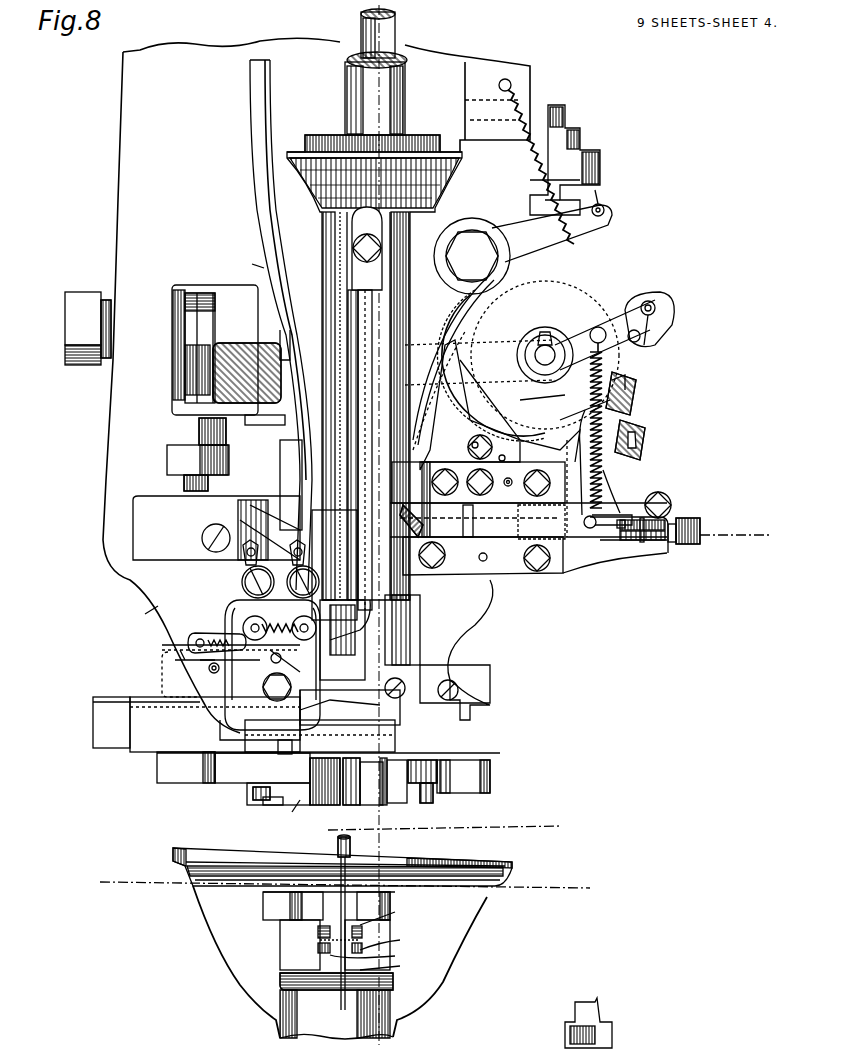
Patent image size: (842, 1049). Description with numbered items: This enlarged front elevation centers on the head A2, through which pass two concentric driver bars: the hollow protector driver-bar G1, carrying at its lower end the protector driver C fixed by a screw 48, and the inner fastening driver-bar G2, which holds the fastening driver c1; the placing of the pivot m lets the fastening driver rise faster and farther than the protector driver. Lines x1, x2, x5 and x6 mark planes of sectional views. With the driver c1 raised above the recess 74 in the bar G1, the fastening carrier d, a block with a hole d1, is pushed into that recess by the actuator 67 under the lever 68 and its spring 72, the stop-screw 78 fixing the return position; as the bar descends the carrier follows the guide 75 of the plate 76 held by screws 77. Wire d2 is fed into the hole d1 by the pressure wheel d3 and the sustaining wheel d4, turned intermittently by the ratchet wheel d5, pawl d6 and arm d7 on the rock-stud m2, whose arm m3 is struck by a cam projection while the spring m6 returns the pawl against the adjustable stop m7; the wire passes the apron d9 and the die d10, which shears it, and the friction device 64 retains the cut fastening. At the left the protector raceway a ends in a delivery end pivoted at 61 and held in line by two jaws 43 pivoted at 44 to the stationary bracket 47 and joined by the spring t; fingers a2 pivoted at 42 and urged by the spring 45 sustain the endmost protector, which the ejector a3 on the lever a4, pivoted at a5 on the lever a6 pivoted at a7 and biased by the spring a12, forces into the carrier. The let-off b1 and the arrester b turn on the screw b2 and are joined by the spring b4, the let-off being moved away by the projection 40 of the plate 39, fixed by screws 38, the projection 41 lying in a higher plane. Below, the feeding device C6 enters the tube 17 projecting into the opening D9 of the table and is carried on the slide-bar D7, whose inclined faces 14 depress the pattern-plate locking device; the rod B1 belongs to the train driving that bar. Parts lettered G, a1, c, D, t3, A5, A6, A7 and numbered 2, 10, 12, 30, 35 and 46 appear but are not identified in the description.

The head A2 is at (122, 175).
The fastening driver-bar G2 is at (396, 28).
The protector driver-bar G1 is at (348, 94).
The spindle housing column G is at (322, 215).
The protector driver C is at (380, 262).
The fastening driver c1 is at (382, 248).
The section line x2 is at (365, 9).
The curved lever a1 is at (254, 226).
The protector raceway a is at (256, 265).
The pivot a7 is at (75, 320).
The lever a6 is at (200, 340).
The pivot a5 is at (290, 350).
The spring a12 is at (282, 434).
The lever a4 is at (282, 466).
The pressure wheel d3 is at (465, 292).
The wire d2 is at (575, 255).
The rock-stud m2 is at (548, 340).
The arm m3 is at (445, 350).
The sustaining wheel d4 is at (580, 315).
The ratchet wheel d5 is at (632, 304).
The pawl d6 is at (658, 312).
The arm d7 is at (628, 360).
The pivot m is at (606, 427).
The adjustable stop m7 is at (630, 427).
The spring m6 is at (605, 472).
The apron d9 is at (468, 430).
The die d10 is at (470, 460).
The hole d1 is at (453, 537).
The fastening carrier d is at (480, 556).
The friction device 64 is at (412, 522).
The screw 48 is at (404, 506).
The recess 74 is at (350, 520).
The actuator 67 is at (608, 552).
The spring 72 is at (630, 550).
The lever 68 is at (612, 522).
The stop-screw 78 is at (692, 524).
The section line x1 is at (608, 781).
The pivot 44 is at (270, 530).
The screw 46 is at (202, 540).
The screw b2 is at (262, 540).
The jaws 43 is at (242, 586).
The pivot 42 is at (250, 624).
The spring b4 is at (210, 632).
The arrester b is at (195, 648).
The stationary bracket 47 is at (138, 616).
The spring 45 is at (423, 621).
The projection 41 is at (220, 658).
The projection 40 is at (208, 668).
The pivot 61 is at (240, 690).
The plate 39 is at (142, 748).
The screws 38 is at (215, 748).
The block 30 is at (260, 748).
The fingers a2 is at (225, 725).
The ejector a3 is at (318, 705).
The pin 35 is at (292, 748).
The base t3 is at (328, 746).
The bushing 10 is at (312, 764).
The post 2 is at (385, 800).
The base part A6 is at (430, 790).
The base part A5 is at (485, 762).
The base part A7 is at (272, 806).
The pin 12 is at (289, 812).
The spring t is at (352, 640).
The let-off b1 is at (312, 688).
The link c is at (353, 617).
The guide 75 is at (400, 618).
The plate 76 is at (448, 660).
The screws 77 is at (440, 690).
The rod B1 is at (168, 856).
The section line x6 is at (447, 820).
The section line x5 is at (353, 891).
The feeding device C6 is at (338, 843).
The bracket D is at (268, 1018).
The opening D9 is at (290, 908).
The slide-bar D7 is at (318, 936).
The tube 17 is at (330, 960).
The inclined faces 14 is at (395, 950).